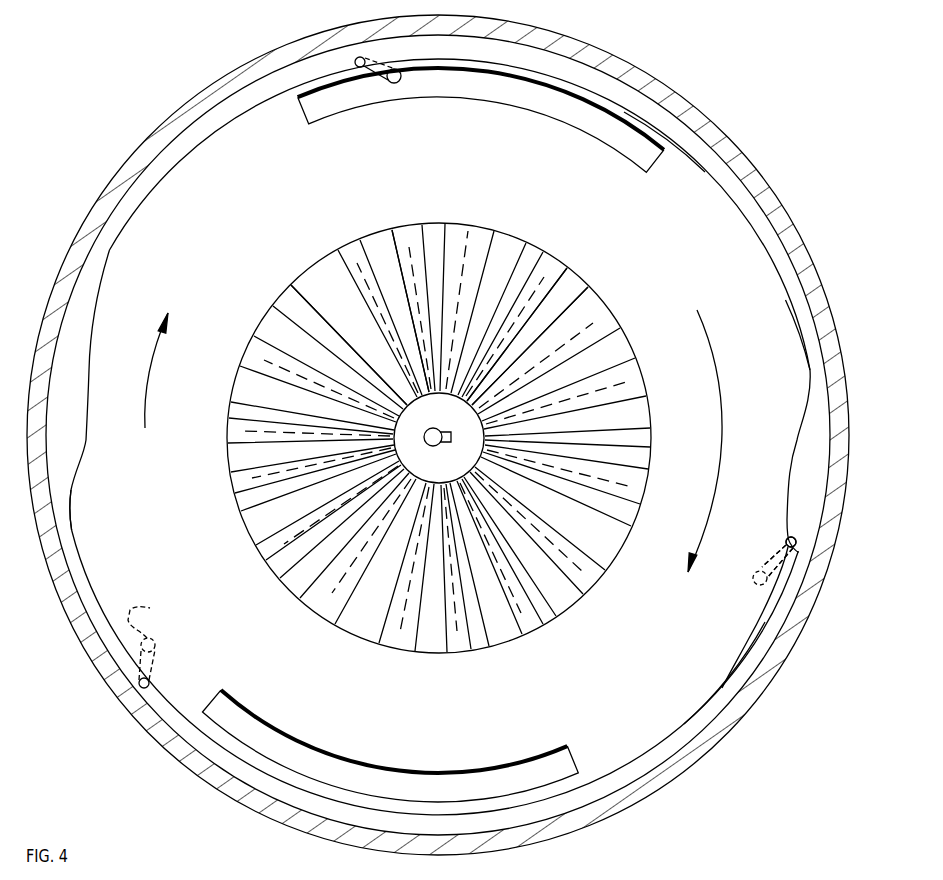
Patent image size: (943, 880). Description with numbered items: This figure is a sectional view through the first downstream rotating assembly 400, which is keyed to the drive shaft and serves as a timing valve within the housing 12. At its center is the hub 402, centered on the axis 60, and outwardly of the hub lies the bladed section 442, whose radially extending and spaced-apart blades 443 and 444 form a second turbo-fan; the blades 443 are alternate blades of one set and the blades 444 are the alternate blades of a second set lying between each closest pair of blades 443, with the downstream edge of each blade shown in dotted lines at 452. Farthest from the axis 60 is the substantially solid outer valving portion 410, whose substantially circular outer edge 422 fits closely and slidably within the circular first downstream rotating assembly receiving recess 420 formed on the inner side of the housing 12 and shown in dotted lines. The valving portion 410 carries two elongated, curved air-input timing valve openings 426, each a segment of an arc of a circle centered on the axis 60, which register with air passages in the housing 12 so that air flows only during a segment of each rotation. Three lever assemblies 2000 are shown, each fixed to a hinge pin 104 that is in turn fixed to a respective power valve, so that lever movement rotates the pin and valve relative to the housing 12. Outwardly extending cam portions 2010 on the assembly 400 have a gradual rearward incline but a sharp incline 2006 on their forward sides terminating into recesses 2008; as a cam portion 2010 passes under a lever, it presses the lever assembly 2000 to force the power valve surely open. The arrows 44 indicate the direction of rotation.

The housing 12 is at (663, 800).
The first downstream rotating assembly 400 is at (699, 157).
The substantially solid outer valving portion 410 is at (663, 135).
The first downstream rotating assembly receiving recess 420 is at (788, 538).
The substantially circular outer edge 422 is at (722, 668).
The air-input timing valve openings 426 is at (484, 87).
The lever assemblies 2000 is at (367, 60).
The hinge pin 104 is at (398, 83).
The sharp incline 2006 is at (70, 531).
The recesses 2008 is at (88, 441).
The outwardly extending cam portions 2010 is at (783, 284).
The direction of rotation arrow 44 is at (148, 408).
The hub 402 is at (645, 443).
The bladed section 442 is at (566, 277).
The blades 443 is at (432, 222).
The blades 444 is at (398, 229).
The downstream edge of the blades 452 is at (476, 252).
The axis 60 is at (452, 430).